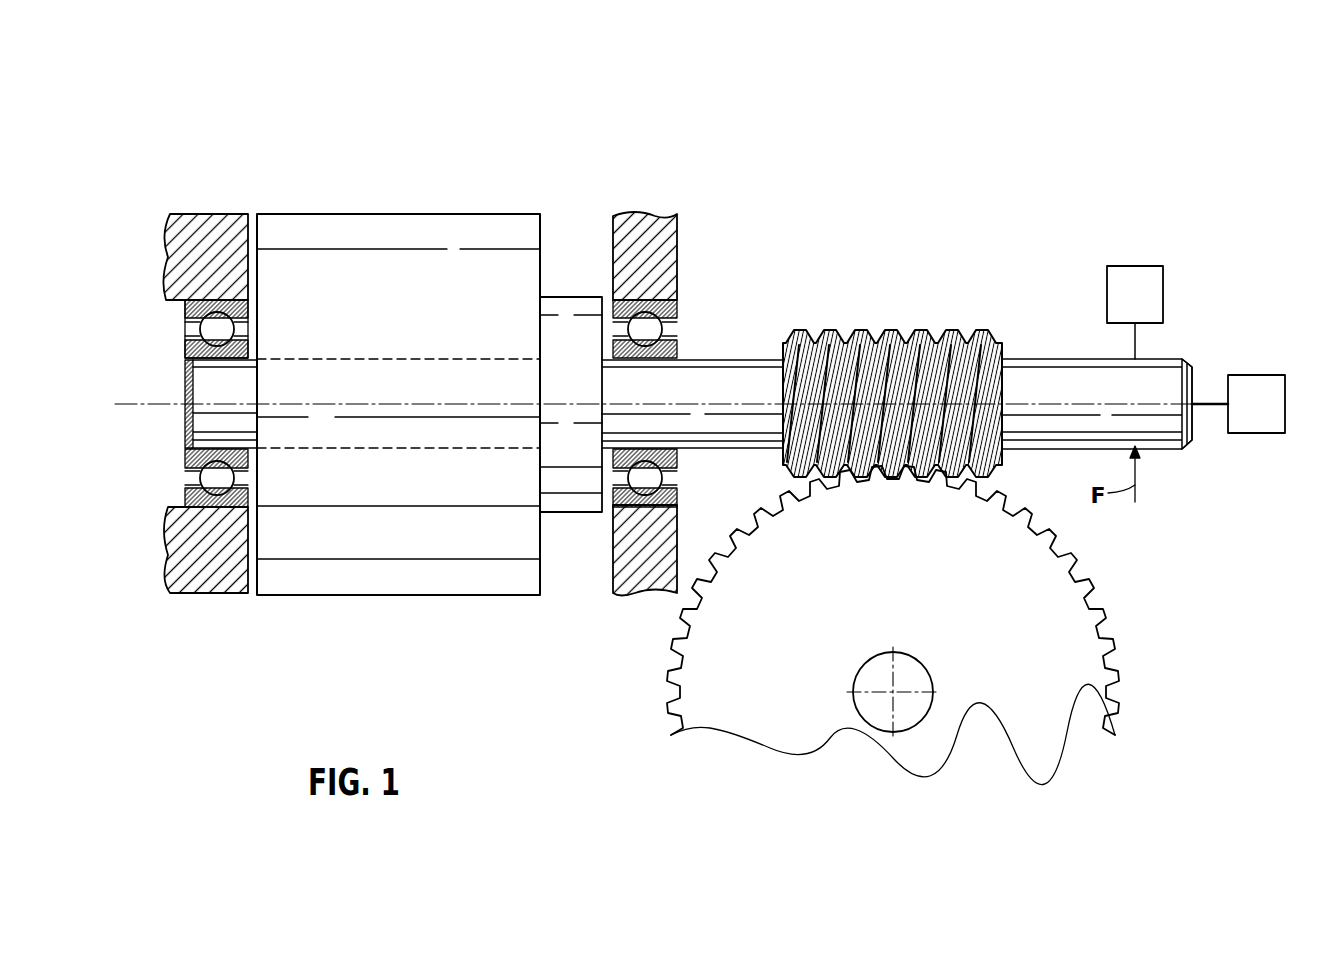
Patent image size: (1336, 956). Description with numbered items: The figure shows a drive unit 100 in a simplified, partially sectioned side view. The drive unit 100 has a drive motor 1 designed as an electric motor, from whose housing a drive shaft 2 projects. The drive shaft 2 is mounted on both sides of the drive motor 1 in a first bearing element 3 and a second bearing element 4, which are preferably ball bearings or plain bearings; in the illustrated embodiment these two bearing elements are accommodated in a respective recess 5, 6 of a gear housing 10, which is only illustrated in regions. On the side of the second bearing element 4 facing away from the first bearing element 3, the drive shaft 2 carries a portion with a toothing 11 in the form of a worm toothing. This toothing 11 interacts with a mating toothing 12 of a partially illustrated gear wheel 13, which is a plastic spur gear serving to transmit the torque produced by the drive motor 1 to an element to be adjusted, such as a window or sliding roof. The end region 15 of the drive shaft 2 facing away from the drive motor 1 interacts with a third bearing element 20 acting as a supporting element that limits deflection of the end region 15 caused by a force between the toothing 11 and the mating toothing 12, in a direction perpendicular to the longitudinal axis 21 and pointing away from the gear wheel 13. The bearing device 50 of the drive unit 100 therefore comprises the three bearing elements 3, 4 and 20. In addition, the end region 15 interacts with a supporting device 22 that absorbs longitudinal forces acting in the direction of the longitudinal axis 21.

The drive motor 1 is at (397, 197).
The drive shaft 2 is at (731, 383).
The first bearing element 3 is at (210, 477).
The second bearing element 4 is at (672, 325).
The recess 5 is at (178, 500).
The recess 6 is at (672, 490).
The gear housing 10 is at (210, 572).
The toothing 11 is at (948, 331).
The mating toothing 12 is at (1108, 632).
The gear wheel 13 is at (1017, 702).
The end region 15 is at (1175, 452).
The third bearing element 20 is at (1133, 290).
The longitudinal axis 21 is at (1065, 400).
The supporting device 22 is at (1253, 393).
The bearing device 50 is at (898, 248).
The drive unit 100 is at (815, 150).